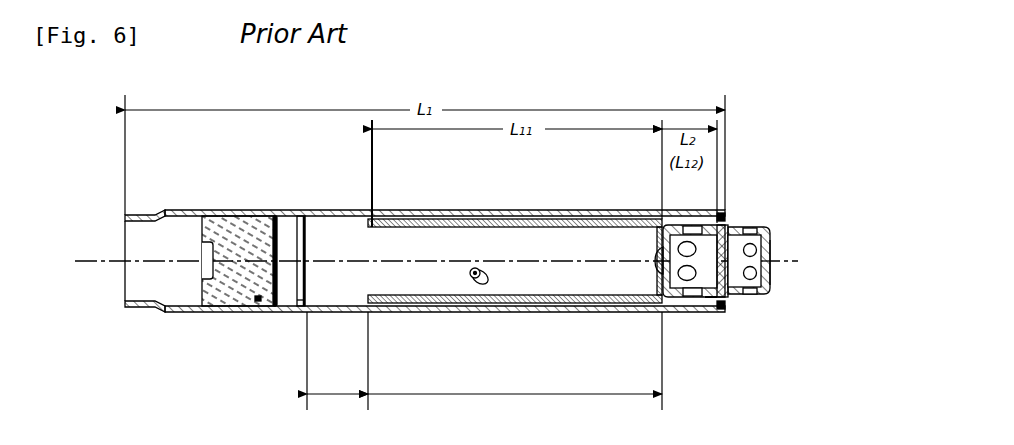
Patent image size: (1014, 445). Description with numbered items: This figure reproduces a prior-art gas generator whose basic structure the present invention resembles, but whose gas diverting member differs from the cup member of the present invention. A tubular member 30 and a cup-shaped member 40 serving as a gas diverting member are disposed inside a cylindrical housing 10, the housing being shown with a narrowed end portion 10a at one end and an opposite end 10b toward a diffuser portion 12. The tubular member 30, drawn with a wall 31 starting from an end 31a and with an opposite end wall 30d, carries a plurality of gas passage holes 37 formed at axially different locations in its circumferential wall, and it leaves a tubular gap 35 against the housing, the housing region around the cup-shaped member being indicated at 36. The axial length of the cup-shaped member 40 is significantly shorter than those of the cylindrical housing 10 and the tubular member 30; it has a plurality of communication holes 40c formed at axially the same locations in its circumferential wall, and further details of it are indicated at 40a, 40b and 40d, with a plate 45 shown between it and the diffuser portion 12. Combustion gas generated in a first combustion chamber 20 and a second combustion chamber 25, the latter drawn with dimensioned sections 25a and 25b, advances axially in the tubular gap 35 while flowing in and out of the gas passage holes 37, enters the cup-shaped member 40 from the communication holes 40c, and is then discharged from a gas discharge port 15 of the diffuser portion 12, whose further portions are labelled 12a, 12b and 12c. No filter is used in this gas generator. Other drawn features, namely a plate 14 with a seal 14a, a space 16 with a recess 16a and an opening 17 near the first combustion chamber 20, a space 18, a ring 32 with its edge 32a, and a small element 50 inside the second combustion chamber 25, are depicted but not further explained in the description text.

The cylindrical housing 10 is at (425, 210).
The narrow end portion of outer tube 10a is at (150, 213).
The end of outer tube 10b is at (720, 312).
The diffuser portion 12 is at (772, 232).
The flange of end plug 12a is at (730, 298).
The end wall of plug 12b is at (768, 293).
The axis of plug 12c is at (773, 255).
The plate 14 is at (276, 230).
The seal 14a is at (257, 302).
The gas discharge port 15 is at (753, 230).
The chamber 16 is at (138, 279).
The recess of piston 16a is at (206, 282).
The opening 17 is at (170, 295).
The space 18 is at (283, 274).
The first combustion chamber 20 is at (225, 232).
The second combustion chamber 25 is at (492, 252).
The chamber section a 25a is at (337, 367).
The chamber section b 25b is at (515, 367).
The tubular member 30 is at (483, 222).
The end wall of inner tube 30d is at (657, 250).
The inner tube wall 31 is at (368, 304).
The end of inner tube 31a is at (370, 212).
The ring 32 is at (305, 232).
The ring edge 32a is at (300, 305).
The tubular gap 35 is at (560, 218).
The tube portion 36 is at (677, 210).
The gas passage holes 37 is at (603, 302).
The cup-shaped member 40 is at (706, 222).
The coupler lower portion 40a is at (666, 298).
The coupler lower end 40b is at (715, 300).
The communication holes 40c is at (688, 226).
The coupler projection 40d is at (657, 268).
The partition plate 45 is at (721, 250).
The projectile 50 is at (481, 287).